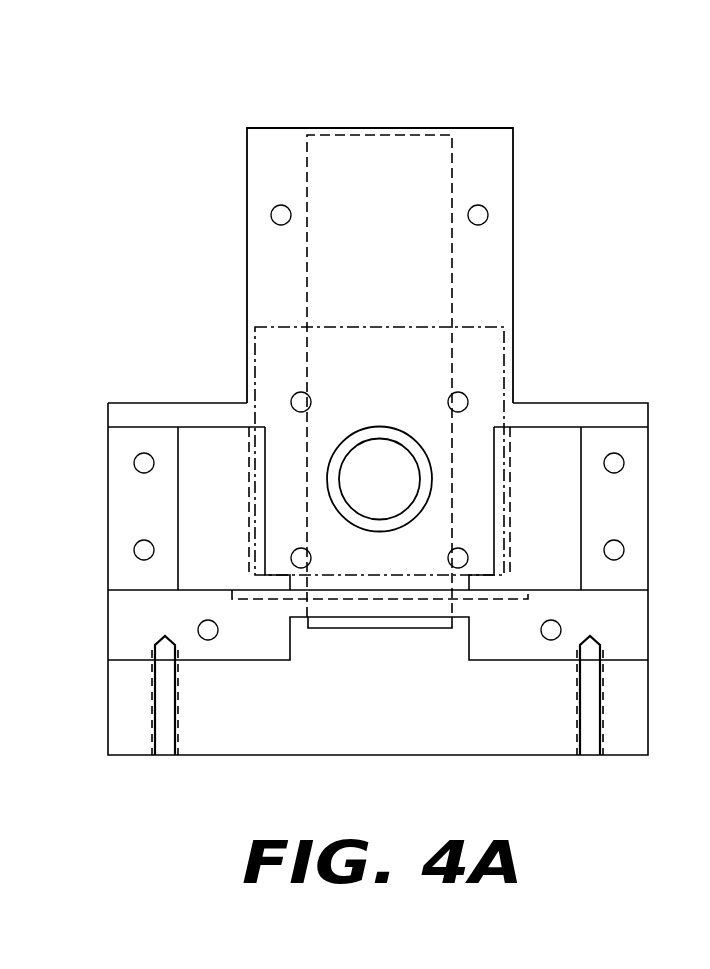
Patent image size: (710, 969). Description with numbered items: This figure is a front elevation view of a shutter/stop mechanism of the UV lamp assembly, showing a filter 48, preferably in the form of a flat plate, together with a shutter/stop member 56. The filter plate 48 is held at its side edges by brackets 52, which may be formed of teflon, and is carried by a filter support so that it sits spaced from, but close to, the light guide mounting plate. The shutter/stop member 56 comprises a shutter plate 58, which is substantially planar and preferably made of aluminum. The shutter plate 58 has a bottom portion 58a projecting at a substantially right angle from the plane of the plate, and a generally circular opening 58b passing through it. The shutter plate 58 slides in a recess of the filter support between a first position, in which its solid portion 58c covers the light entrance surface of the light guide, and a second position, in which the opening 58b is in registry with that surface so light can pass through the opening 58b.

The filter 48 is at (492, 375).
The brackets 52 is at (205, 457).
The shutter/stop member 56 is at (430, 152).
The shutter plate 58 is at (334, 158).
The bottom portion 58a is at (368, 625).
The opening 58b is at (377, 440).
The solid portion 58c is at (380, 230).